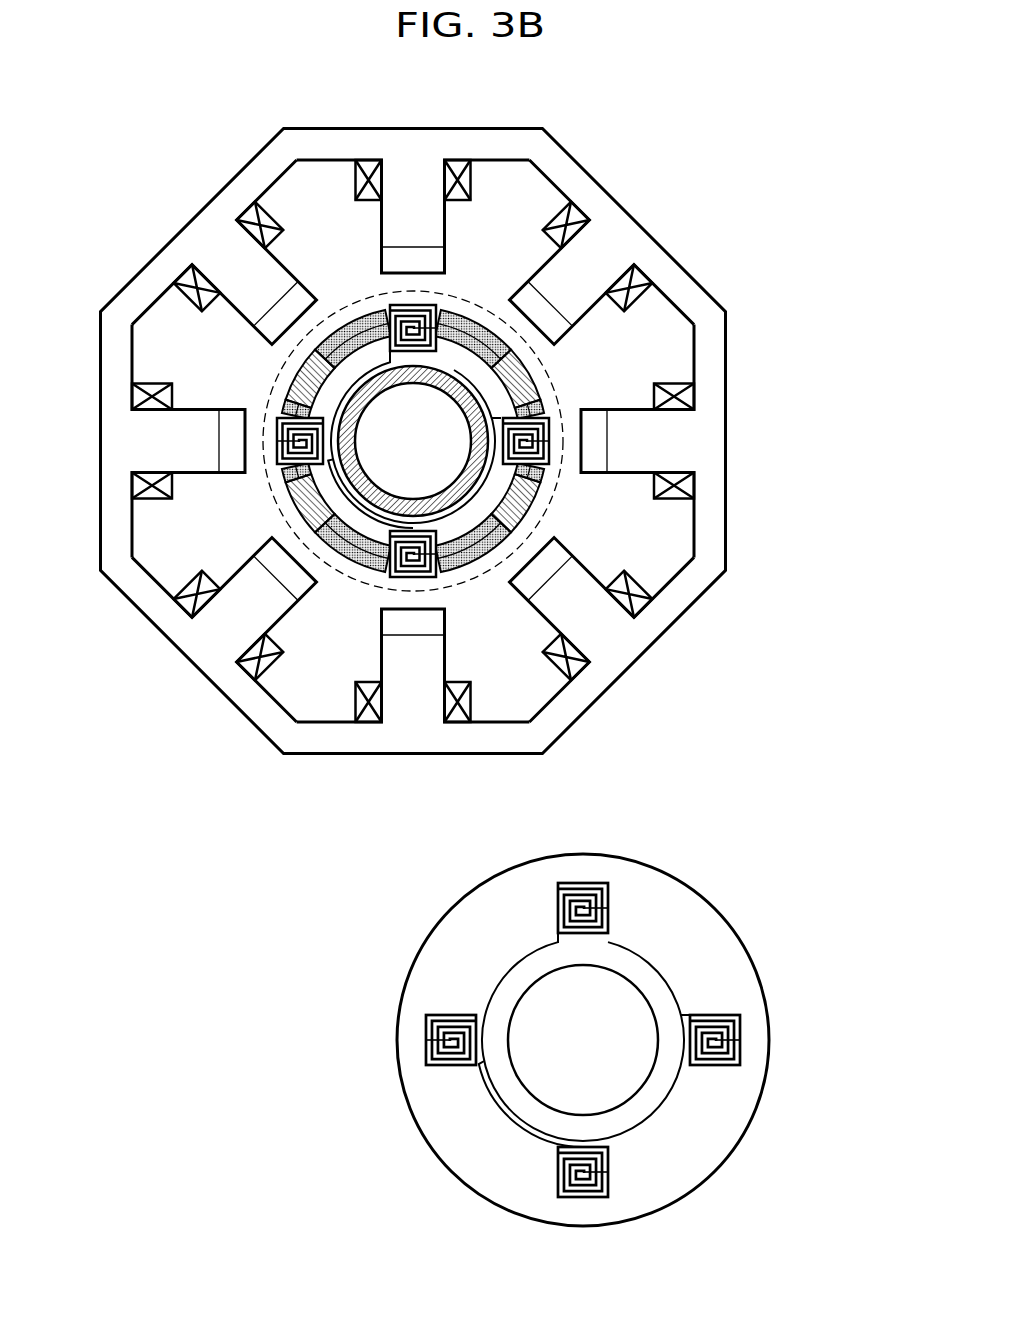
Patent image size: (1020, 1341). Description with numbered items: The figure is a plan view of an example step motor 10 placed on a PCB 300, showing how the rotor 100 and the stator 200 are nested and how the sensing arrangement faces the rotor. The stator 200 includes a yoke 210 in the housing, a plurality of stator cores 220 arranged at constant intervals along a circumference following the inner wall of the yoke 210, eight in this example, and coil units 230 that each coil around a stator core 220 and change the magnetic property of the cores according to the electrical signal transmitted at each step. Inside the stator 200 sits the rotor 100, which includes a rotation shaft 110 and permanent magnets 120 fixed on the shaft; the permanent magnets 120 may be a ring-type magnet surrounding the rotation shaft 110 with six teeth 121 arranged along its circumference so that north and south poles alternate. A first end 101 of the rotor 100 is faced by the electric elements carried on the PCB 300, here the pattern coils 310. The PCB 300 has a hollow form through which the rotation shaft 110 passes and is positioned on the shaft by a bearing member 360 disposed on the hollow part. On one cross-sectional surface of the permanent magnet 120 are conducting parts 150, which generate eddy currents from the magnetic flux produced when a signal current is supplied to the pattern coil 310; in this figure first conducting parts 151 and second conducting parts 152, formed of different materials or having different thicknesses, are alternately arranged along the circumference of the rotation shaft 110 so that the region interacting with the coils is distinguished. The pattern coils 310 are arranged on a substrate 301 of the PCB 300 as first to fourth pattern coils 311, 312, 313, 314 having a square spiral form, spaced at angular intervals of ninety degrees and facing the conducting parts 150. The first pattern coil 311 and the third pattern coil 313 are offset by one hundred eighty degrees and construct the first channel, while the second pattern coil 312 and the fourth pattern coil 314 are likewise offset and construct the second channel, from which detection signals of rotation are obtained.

The step motor 10 is at (725, 117).
The rotor 100 is at (470, 547).
The first end 101 is at (353, 367).
The rotation shaft 110 is at (402, 477).
The permanent magnets 120 is at (283, 497).
The teeth 121 is at (290, 528).
The conducting parts 150 is at (540, 507).
The first conducting parts 151 is at (470, 315).
The second conducting parts 152 is at (525, 382).
The stator 200 is at (607, 178).
The yoke 210 is at (346, 141).
The stator cores 220 is at (405, 222).
The coil units 230 is at (458, 178).
The PCB 300 is at (267, 387).
The substrate 301 is at (495, 892).
The pattern coil 310 is at (407, 565).
The first pattern coil 311 is at (583, 887).
The second pattern coil 312 is at (717, 1040).
The third pattern coil 313 is at (583, 1172).
The fourth pattern coil 314 is at (451, 1040).
The bearing member 360 is at (337, 438).